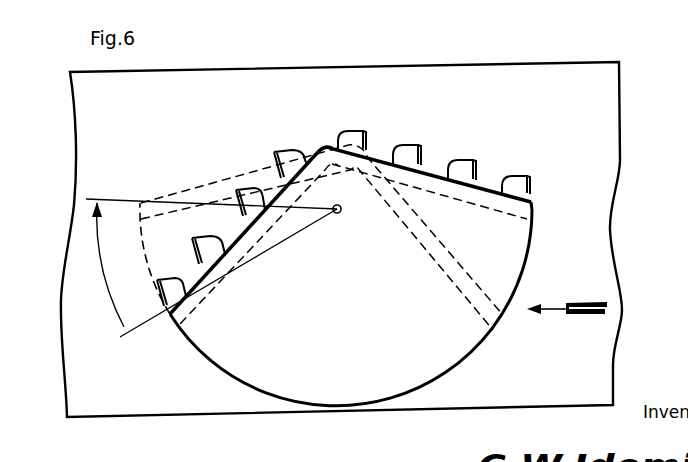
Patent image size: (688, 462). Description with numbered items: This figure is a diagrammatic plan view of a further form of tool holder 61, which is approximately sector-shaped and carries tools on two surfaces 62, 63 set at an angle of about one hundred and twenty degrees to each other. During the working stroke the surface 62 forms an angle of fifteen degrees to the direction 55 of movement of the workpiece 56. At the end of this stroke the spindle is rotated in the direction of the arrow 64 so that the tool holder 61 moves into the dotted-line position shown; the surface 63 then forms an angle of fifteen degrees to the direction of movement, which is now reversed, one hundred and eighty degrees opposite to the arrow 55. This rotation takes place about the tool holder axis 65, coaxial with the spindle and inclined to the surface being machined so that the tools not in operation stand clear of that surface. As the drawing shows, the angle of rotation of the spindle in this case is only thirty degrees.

The direction of movement of the workpiece 55 is at (585, 315).
The workpiece 56 is at (514, 370).
The tool holder 61 is at (333, 340).
The surface 62 is at (382, 160).
The surface 63 is at (279, 194).
The arrow 64 is at (101, 256).
The tool holder axis 65 is at (339, 214).